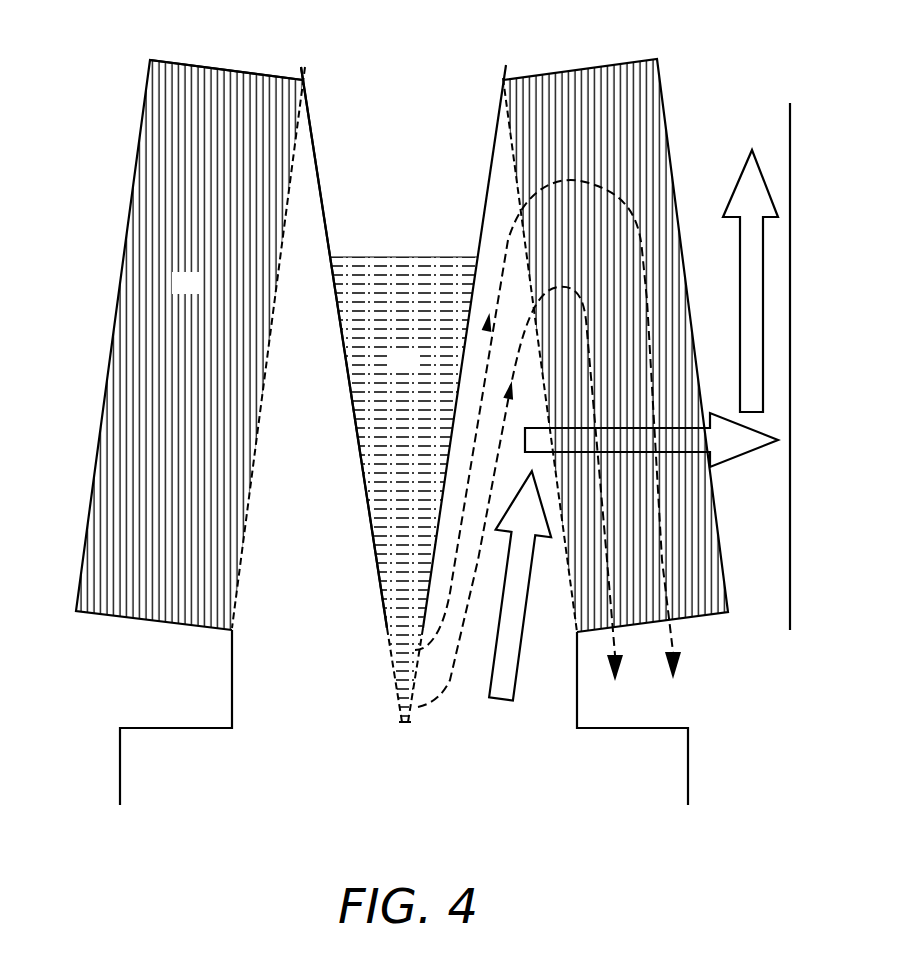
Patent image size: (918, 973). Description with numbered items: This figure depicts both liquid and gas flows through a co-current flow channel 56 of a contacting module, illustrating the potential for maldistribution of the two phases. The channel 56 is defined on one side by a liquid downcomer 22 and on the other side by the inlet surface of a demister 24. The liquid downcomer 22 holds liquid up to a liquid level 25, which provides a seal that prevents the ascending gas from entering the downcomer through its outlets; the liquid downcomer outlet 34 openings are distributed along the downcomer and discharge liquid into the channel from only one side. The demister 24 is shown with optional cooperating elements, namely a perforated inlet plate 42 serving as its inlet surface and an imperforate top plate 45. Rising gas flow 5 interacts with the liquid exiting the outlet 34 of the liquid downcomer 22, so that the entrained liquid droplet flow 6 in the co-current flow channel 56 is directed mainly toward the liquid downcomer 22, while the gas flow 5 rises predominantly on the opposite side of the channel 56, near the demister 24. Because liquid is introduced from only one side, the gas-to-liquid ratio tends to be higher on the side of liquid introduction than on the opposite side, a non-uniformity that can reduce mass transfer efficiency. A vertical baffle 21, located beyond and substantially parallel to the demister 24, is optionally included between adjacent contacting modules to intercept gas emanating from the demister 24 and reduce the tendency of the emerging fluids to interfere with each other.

The imperforate top plate 45 is at (193, 62).
The demister 24 is at (176, 292).
The perforated inlet plate 42 is at (240, 574).
The co-current flow channel 56 is at (401, 393).
The liquid level 25 is at (394, 369).
The liquid downcomer 22 is at (365, 479).
The liquid downcomer outlet 34 is at (389, 651).
The entrained liquid droplet flow 6 is at (447, 690).
The rising gas flow 5 is at (505, 701).
The vertical baffle 21 is at (792, 126).